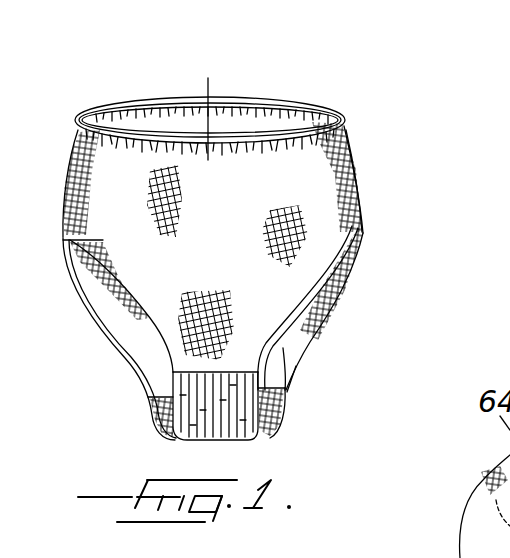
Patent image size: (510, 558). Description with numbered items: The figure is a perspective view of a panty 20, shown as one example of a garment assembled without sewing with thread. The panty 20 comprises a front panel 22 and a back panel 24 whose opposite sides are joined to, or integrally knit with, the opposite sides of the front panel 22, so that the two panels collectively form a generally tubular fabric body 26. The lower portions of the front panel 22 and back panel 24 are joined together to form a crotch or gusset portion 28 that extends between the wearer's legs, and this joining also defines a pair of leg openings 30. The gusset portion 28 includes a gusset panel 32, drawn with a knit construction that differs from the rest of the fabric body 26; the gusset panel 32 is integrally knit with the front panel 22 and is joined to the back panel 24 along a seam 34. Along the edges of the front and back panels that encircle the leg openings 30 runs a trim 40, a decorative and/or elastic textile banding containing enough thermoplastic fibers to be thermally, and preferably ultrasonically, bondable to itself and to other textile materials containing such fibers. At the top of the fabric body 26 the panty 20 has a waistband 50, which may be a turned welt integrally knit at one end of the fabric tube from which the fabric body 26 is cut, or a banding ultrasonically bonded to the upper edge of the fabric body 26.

The panty 20 is at (392, 126).
The front panel 22 is at (237, 237).
The back panel 24 is at (110, 289).
The fabric body 26 is at (365, 179).
The gusset portion 28 is at (248, 448).
The leg openings 30 is at (128, 323).
The gusset panel 32 is at (270, 415).
The seam 34 is at (292, 373).
The trim 40 is at (137, 370).
The waistband 50 is at (220, 99).